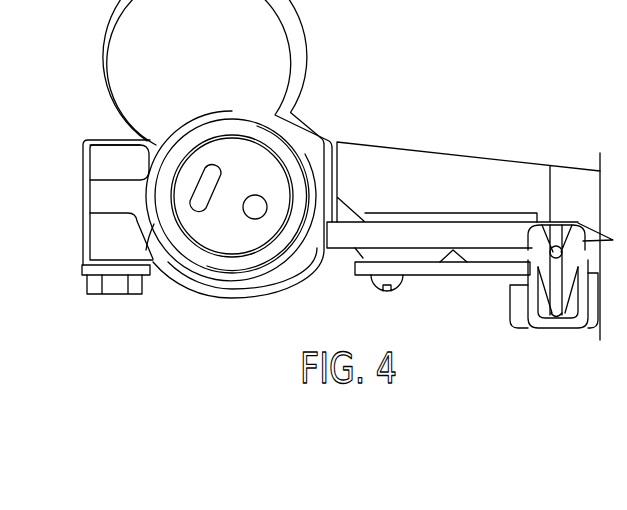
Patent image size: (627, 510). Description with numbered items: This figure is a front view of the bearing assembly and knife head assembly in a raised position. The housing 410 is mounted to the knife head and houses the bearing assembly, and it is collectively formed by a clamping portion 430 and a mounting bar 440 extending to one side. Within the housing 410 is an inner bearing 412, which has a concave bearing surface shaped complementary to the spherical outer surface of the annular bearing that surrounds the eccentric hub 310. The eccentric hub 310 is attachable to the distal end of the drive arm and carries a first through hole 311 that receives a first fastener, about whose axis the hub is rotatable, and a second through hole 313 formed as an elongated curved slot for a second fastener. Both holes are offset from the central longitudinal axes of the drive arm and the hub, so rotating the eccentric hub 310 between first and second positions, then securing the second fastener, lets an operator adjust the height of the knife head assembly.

The housing 410 is at (228, 77).
The eccentric hub 310 is at (227, 153).
The inner bearing 412 is at (265, 133).
The clamping portion 430 is at (305, 137).
The second through hole 313 is at (188, 194).
The first through hole 311 is at (247, 216).
The mounting bar 440 is at (348, 243).